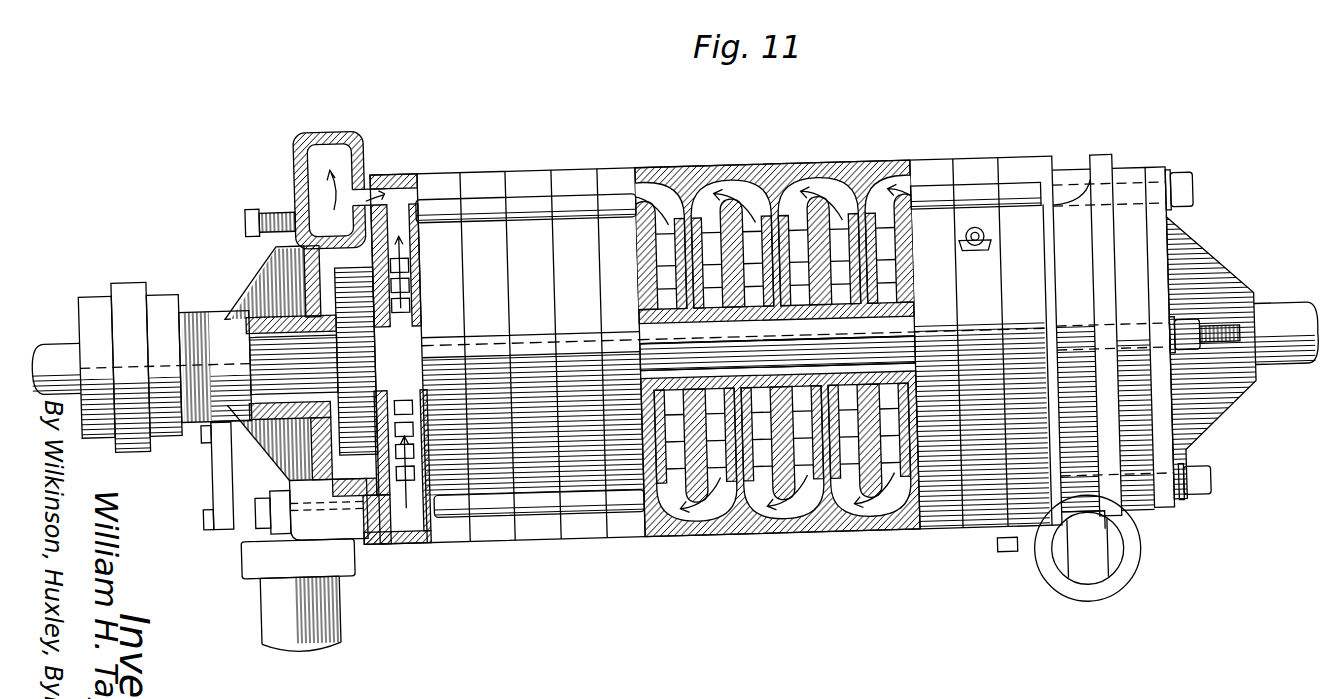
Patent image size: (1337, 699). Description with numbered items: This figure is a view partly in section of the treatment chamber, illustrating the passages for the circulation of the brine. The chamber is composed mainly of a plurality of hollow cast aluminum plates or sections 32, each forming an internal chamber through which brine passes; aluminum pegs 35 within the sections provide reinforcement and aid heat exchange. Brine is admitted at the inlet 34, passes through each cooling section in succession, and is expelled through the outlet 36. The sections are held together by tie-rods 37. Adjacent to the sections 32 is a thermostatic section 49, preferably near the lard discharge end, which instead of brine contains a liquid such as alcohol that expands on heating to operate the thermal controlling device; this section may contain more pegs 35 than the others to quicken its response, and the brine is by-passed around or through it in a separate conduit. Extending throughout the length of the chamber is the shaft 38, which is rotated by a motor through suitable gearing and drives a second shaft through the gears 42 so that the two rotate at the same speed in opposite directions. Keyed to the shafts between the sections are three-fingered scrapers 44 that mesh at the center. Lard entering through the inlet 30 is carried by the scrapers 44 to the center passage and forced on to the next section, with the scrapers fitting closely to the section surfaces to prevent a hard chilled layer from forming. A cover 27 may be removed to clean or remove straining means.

The cover 27 is at (214, 480).
The inlet 30 is at (333, 588).
The cast aluminum plates or sections 32 is at (545, 181).
The inlet 34 is at (1132, 561).
The aluminum pegs 35 is at (707, 173).
The outlet 36 is at (373, 134).
The tie-rods 37 is at (516, 206).
The shaft 38 is at (651, 343).
The gears 42 is at (332, 288).
The scrapers 44 is at (417, 285).
The thermostatic section 49 is at (972, 168).